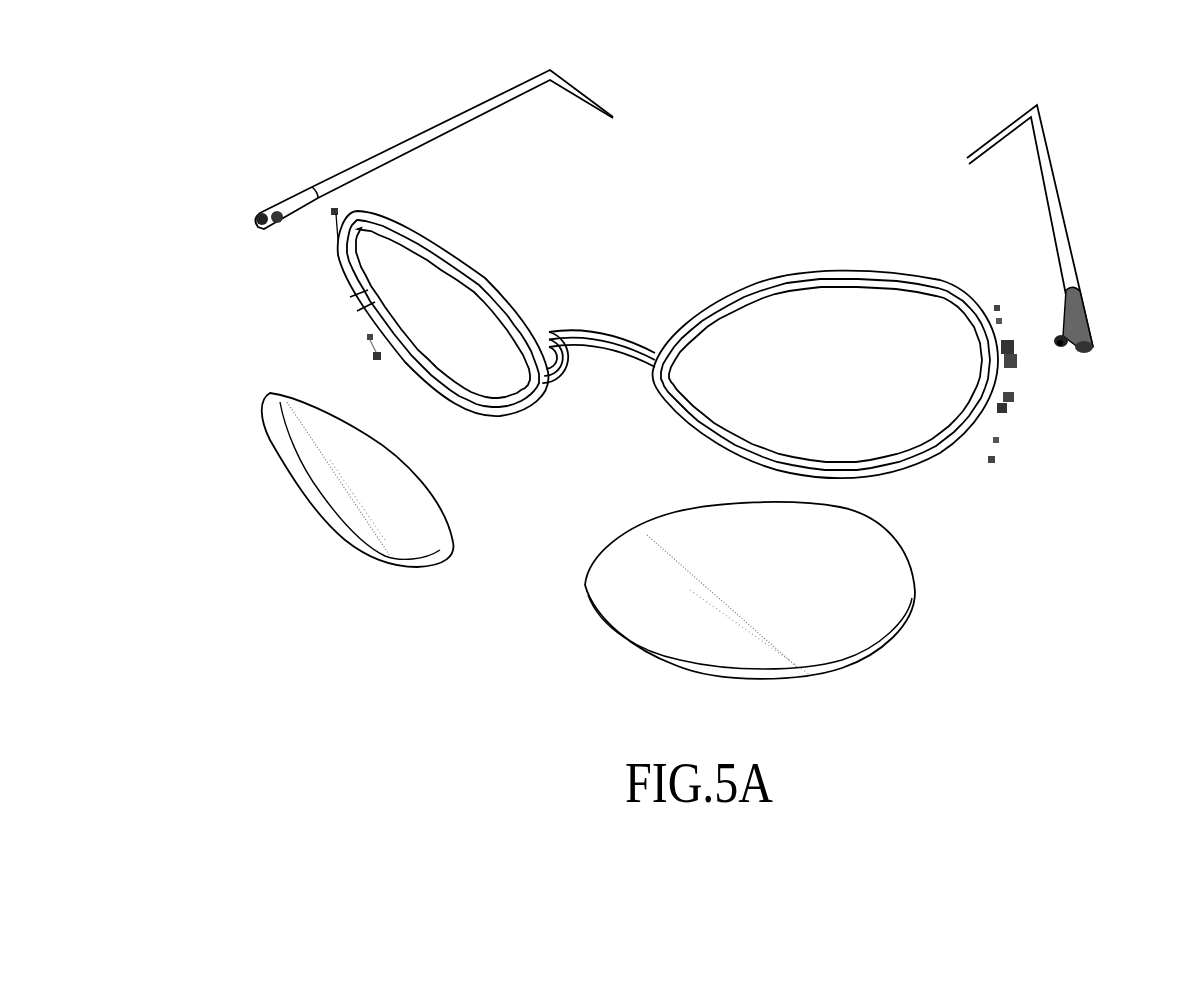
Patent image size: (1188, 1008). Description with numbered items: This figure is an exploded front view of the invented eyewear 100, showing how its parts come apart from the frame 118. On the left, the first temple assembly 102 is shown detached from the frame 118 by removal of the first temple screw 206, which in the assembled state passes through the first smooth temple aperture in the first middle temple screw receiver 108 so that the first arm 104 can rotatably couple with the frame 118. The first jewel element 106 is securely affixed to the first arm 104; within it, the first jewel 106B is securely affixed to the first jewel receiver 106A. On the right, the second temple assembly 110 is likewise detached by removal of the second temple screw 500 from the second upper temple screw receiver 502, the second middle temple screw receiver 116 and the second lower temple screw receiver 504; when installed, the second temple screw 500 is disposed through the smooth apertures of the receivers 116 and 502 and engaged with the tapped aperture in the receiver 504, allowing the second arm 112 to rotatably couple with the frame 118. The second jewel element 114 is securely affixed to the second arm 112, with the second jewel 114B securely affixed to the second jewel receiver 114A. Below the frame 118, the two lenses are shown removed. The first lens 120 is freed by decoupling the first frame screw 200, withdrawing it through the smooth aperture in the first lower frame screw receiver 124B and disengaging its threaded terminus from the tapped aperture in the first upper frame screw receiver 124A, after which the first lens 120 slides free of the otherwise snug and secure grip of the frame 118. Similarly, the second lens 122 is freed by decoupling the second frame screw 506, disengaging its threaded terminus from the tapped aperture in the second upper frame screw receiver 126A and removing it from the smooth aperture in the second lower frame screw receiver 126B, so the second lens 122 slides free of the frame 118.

The eyewear 100 is at (250, 77).
The first temple assembly 102 is at (352, 152).
The first arm 104 is at (422, 130).
The first jewel element 106 is at (265, 227).
The first jewel receiver 106A is at (285, 195).
The first jewel 106B is at (255, 222).
The first middle temple screw receiver 108 is at (277, 227).
The second temple assembly 110 is at (1062, 168).
The second arm 112 is at (1000, 130).
The second jewel element 114 is at (1087, 310).
The second jewel receiver 114A is at (1083, 298).
The second jewel 114B is at (1092, 348).
The second middle temple screw receiver 116 is at (1058, 347).
The frame 118 is at (810, 272).
The first lens 120 is at (292, 490).
The second lens 122 is at (915, 587).
The first upper frame screw receiver 124A is at (350, 297).
The first lower frame screw receiver 124B is at (358, 310).
The second upper frame screw receiver 126A is at (1013, 400).
The second lower frame screw receiver 126B is at (1002, 415).
The first frame screw 200 is at (382, 360).
The first temple screw 206 is at (337, 209).
The second temple screw 500 is at (993, 303).
The second upper temple screw receiver 502 is at (1008, 340).
The second lower temple screw receiver 504 is at (1015, 367).
The second frame screw 506 is at (990, 468).